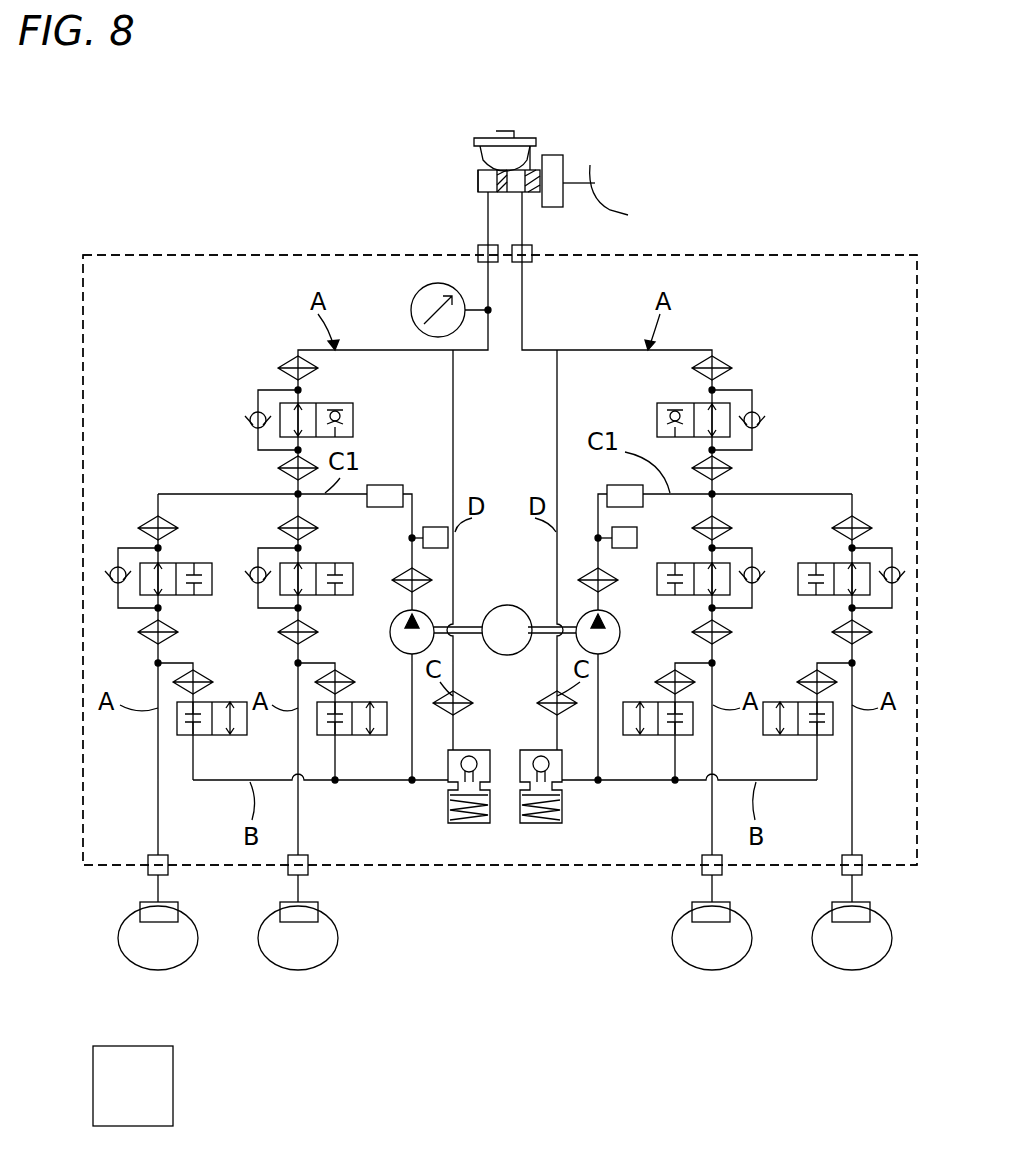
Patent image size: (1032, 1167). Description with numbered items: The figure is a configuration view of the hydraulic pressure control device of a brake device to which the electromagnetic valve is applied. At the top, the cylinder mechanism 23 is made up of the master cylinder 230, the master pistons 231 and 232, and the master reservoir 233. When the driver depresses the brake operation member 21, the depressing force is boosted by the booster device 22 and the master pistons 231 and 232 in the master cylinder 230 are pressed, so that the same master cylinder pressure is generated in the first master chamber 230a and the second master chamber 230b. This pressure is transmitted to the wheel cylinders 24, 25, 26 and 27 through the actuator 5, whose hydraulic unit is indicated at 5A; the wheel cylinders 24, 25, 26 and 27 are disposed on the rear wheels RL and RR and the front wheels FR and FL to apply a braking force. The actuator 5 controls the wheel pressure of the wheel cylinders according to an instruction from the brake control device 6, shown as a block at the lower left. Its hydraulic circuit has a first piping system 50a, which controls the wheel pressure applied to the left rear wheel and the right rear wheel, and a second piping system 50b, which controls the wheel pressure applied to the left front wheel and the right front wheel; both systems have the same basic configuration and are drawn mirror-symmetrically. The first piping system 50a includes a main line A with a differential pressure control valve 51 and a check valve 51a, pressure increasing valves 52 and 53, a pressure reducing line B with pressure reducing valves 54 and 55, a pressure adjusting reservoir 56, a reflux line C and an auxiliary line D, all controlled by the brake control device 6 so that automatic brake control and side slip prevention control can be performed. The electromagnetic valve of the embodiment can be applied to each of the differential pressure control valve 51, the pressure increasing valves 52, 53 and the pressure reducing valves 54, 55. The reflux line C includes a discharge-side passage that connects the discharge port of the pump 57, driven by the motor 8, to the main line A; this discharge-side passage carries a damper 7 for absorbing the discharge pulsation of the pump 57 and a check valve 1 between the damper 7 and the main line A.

The check valve 1 is at (384, 485).
The actuator 5 is at (836, 255).
The hydraulic unit 5A is at (724, 280).
The brake control device 6 is at (93, 1082).
The damper 7 is at (430, 527).
The motor 8 is at (507, 605).
The brake operation member 21 is at (626, 210).
The booster device 22 is at (560, 153).
The cylinder mechanism 23 is at (483, 161).
The wheel cylinder 24 is at (142, 905).
The wheel cylinder 25 is at (282, 905).
The wheel cylinder 26 is at (728, 903).
The wheel cylinder 27 is at (868, 903).
The first piping system 50a is at (178, 345).
The second piping system 50b is at (820, 345).
The differential pressure control valve 51 is at (346, 403).
The check valve 51a is at (252, 416).
The pressure increasing valve 52 is at (190, 563).
The pressure increasing valve 53 is at (333, 563).
The pressure reducing valve 54 is at (240, 702).
The pressure reducing valve 55 is at (375, 702).
The pressure adjusting reservoir 56 is at (448, 823).
The pump 57 is at (398, 615).
The master cylinder 230 is at (483, 169).
The first master chamber 230a is at (520, 190).
The second master chamber 230b is at (478, 183).
The master piston 231 is at (543, 130).
The master piston 232 is at (500, 192).
The master reservoir 233 is at (488, 137).